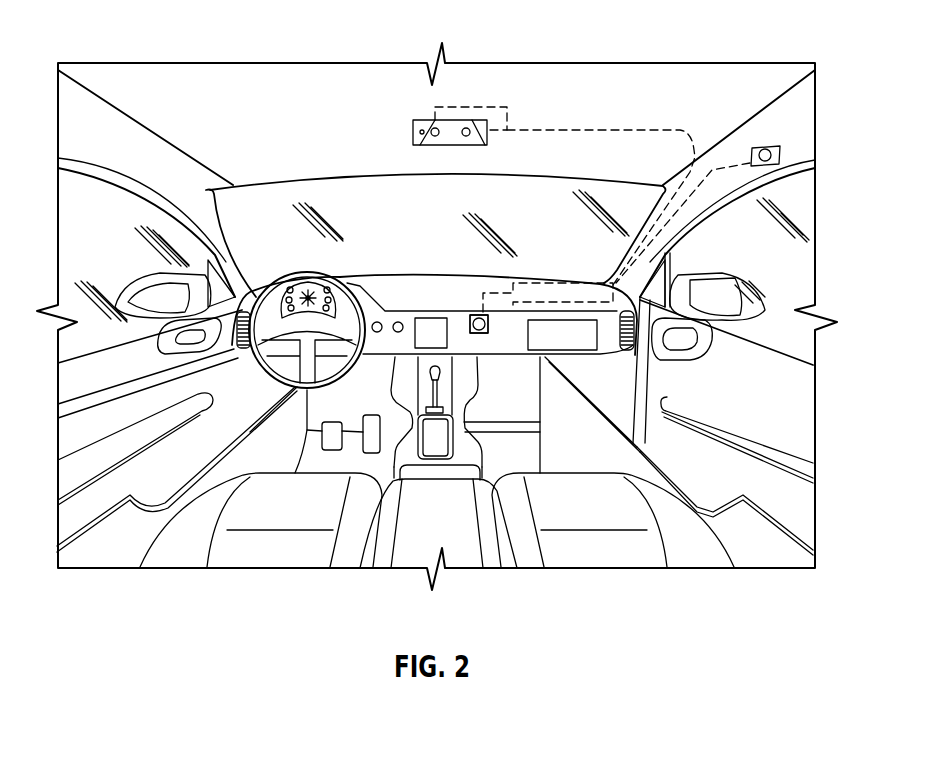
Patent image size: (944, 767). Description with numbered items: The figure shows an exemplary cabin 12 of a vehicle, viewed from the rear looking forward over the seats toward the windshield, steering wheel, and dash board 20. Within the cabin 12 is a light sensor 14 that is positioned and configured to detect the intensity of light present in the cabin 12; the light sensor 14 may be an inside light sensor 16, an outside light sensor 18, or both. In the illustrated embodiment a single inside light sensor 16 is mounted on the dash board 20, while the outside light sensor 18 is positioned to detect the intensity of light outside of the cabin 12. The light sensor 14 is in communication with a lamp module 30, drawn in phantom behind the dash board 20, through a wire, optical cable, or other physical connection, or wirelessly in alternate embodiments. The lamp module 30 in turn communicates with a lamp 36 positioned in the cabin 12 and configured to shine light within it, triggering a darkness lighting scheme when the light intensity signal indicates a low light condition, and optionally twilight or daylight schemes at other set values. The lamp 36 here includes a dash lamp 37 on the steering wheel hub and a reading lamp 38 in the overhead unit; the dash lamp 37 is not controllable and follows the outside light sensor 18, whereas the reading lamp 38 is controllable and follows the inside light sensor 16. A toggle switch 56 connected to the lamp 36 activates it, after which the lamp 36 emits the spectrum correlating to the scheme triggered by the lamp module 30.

The cabin 12 is at (474, 548).
The light sensor 14 is at (767, 148).
The inside light sensor 16 is at (482, 334).
The outside light sensor 18 is at (780, 153).
The dash board 20 is at (648, 373).
The lamp module 30 is at (514, 285).
The lamp 36 is at (437, 146).
The dash lamp 37 is at (298, 284).
The reading lamp 38 is at (464, 120).
The toggle switch 56 is at (421, 120).